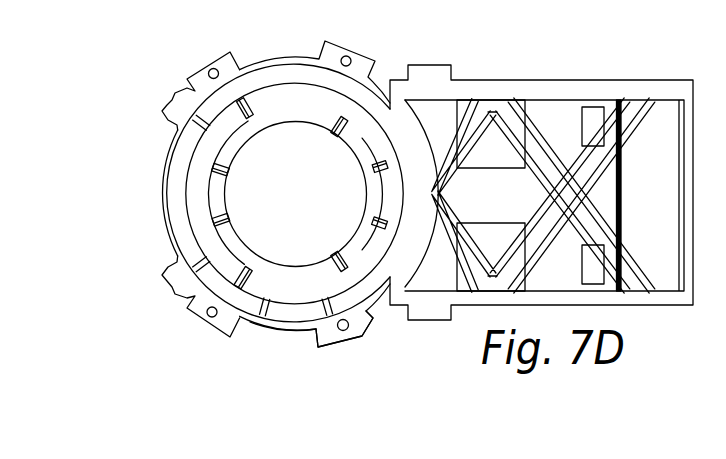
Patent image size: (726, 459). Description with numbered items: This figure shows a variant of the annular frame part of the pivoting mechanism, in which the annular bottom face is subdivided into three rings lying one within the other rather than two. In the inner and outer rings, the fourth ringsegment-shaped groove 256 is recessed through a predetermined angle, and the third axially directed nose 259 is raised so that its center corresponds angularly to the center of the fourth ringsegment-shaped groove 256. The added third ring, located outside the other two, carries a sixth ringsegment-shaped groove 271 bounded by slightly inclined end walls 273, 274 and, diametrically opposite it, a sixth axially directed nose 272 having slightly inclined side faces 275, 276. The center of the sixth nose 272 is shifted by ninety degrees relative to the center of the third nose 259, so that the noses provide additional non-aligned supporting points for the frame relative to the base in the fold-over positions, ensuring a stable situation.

The fourth ringsegment-shaped groove 256 is at (202, 230).
The third axially directed nose 259 is at (212, 190).
The sixth ringsegment-shaped groove 271 is at (290, 75).
The sixth axially directed nose 272 is at (302, 316).
The end wall 273 is at (390, 116).
The end wall 274 is at (203, 76).
The side face 275 is at (218, 322).
The side face 276 is at (349, 318).